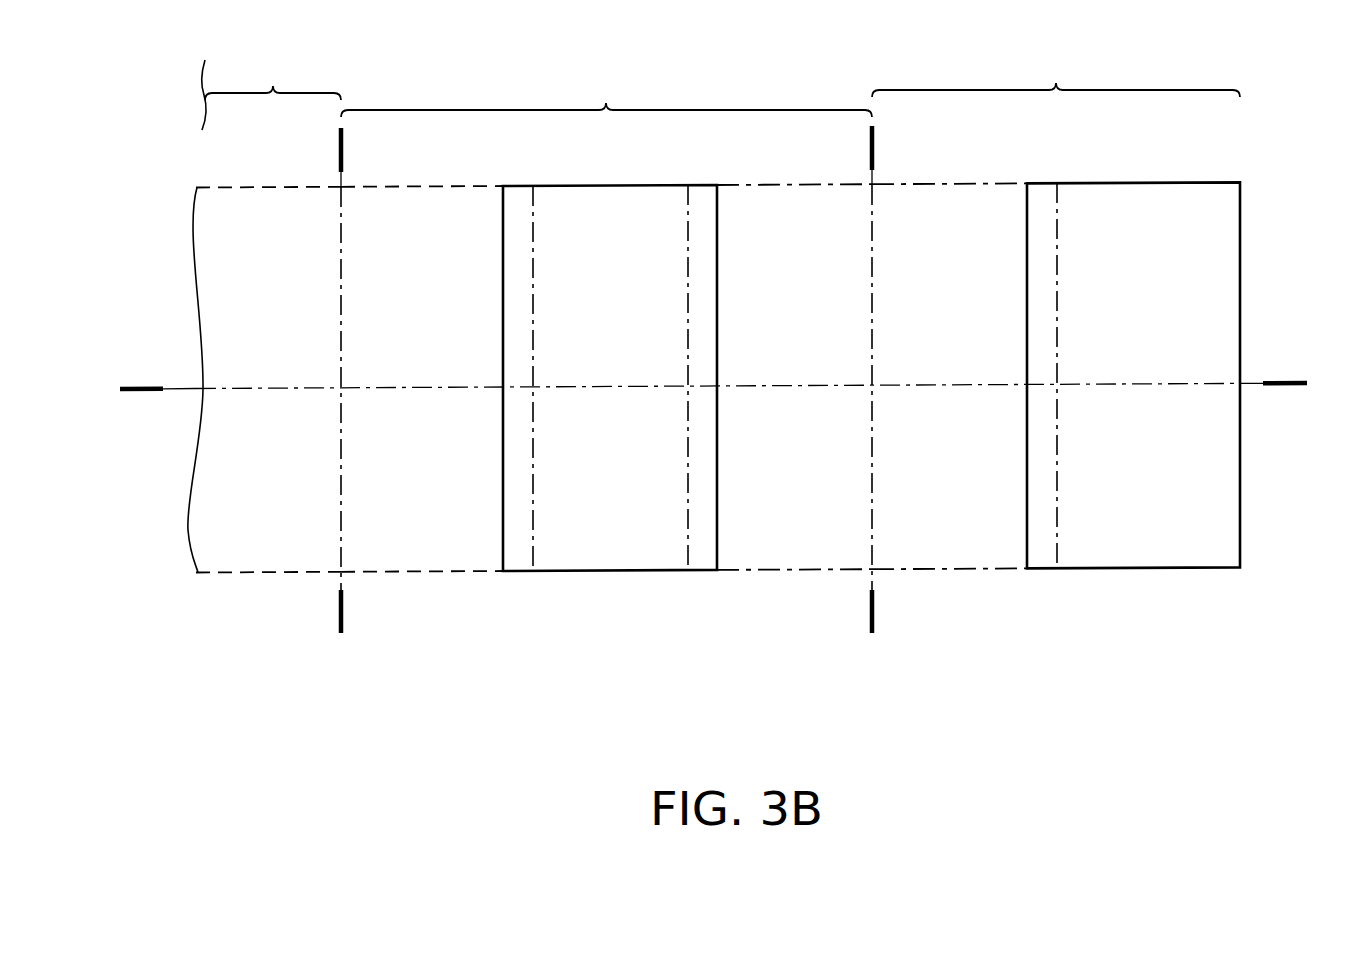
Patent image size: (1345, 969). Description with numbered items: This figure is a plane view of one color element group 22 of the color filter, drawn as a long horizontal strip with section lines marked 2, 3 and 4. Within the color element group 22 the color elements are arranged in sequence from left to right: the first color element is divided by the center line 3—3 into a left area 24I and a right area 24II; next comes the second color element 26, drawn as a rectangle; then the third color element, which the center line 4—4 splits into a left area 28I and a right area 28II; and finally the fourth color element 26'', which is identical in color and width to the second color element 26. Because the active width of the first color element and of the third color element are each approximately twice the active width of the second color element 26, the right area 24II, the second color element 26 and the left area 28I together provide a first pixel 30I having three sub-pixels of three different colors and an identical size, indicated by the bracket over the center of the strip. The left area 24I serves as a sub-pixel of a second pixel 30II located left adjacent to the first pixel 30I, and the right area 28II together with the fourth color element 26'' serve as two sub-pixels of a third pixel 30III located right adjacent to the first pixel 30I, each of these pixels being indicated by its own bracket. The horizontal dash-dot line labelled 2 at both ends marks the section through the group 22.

The color element group 22 is at (1253, 577).
The left area of first color element 24I is at (231, 567).
The right area of first color element 24II is at (421, 566).
The second color element 26 is at (610, 430).
The fourth color element 26'' is at (1133, 429).
The left area of third color element 28I is at (739, 562).
The right area of third color element 28II is at (952, 565).
The first pixel 30I is at (606, 92).
The second pixel 30II is at (271, 91).
The third pixel 30III is at (1056, 71).
The section line 2- 2 is at (140, 389).
The center line 3— 3 is at (338, 150).
The center line 4— 4 is at (869, 148).